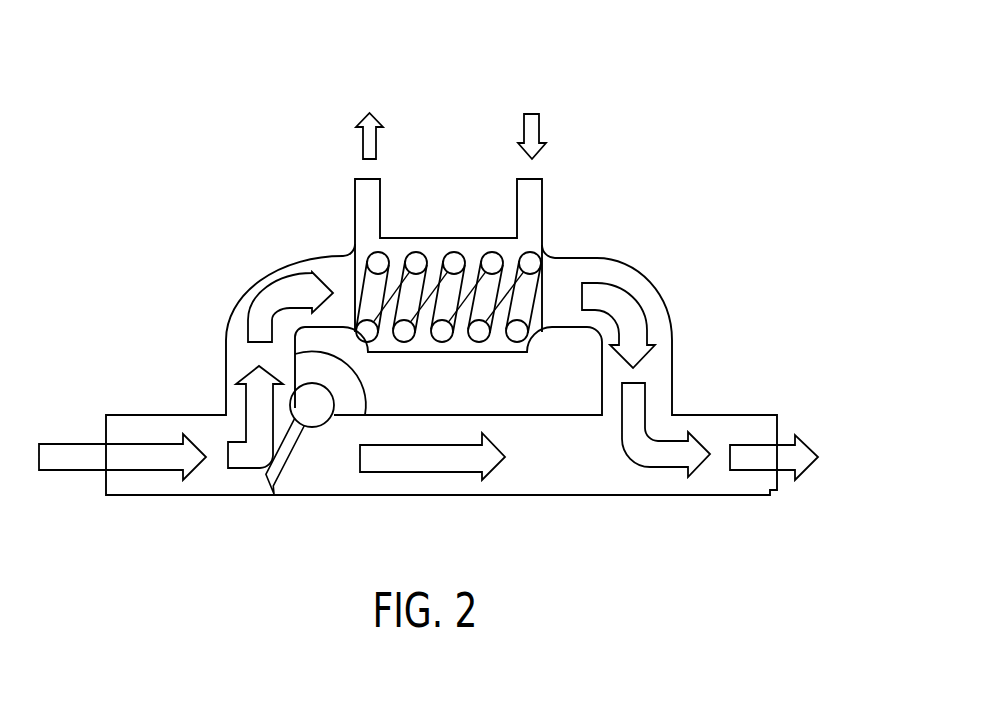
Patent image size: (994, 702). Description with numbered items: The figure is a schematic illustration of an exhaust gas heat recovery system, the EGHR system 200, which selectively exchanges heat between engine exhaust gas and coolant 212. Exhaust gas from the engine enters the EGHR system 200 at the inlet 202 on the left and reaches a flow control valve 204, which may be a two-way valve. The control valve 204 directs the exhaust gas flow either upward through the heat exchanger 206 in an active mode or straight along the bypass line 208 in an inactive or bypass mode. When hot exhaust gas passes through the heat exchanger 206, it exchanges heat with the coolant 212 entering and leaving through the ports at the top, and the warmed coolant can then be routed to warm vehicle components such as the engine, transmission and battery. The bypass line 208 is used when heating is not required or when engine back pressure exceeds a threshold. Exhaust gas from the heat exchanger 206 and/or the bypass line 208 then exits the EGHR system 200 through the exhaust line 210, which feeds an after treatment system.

The EGHR system 200 is at (668, 83).
The inlet 202 is at (55, 444).
The flow control valve 204 is at (295, 370).
The heat exchanger 206 is at (543, 282).
The bypass line 208 is at (519, 497).
The exhaust line 210 is at (730, 413).
The coolant 212 is at (377, 142).